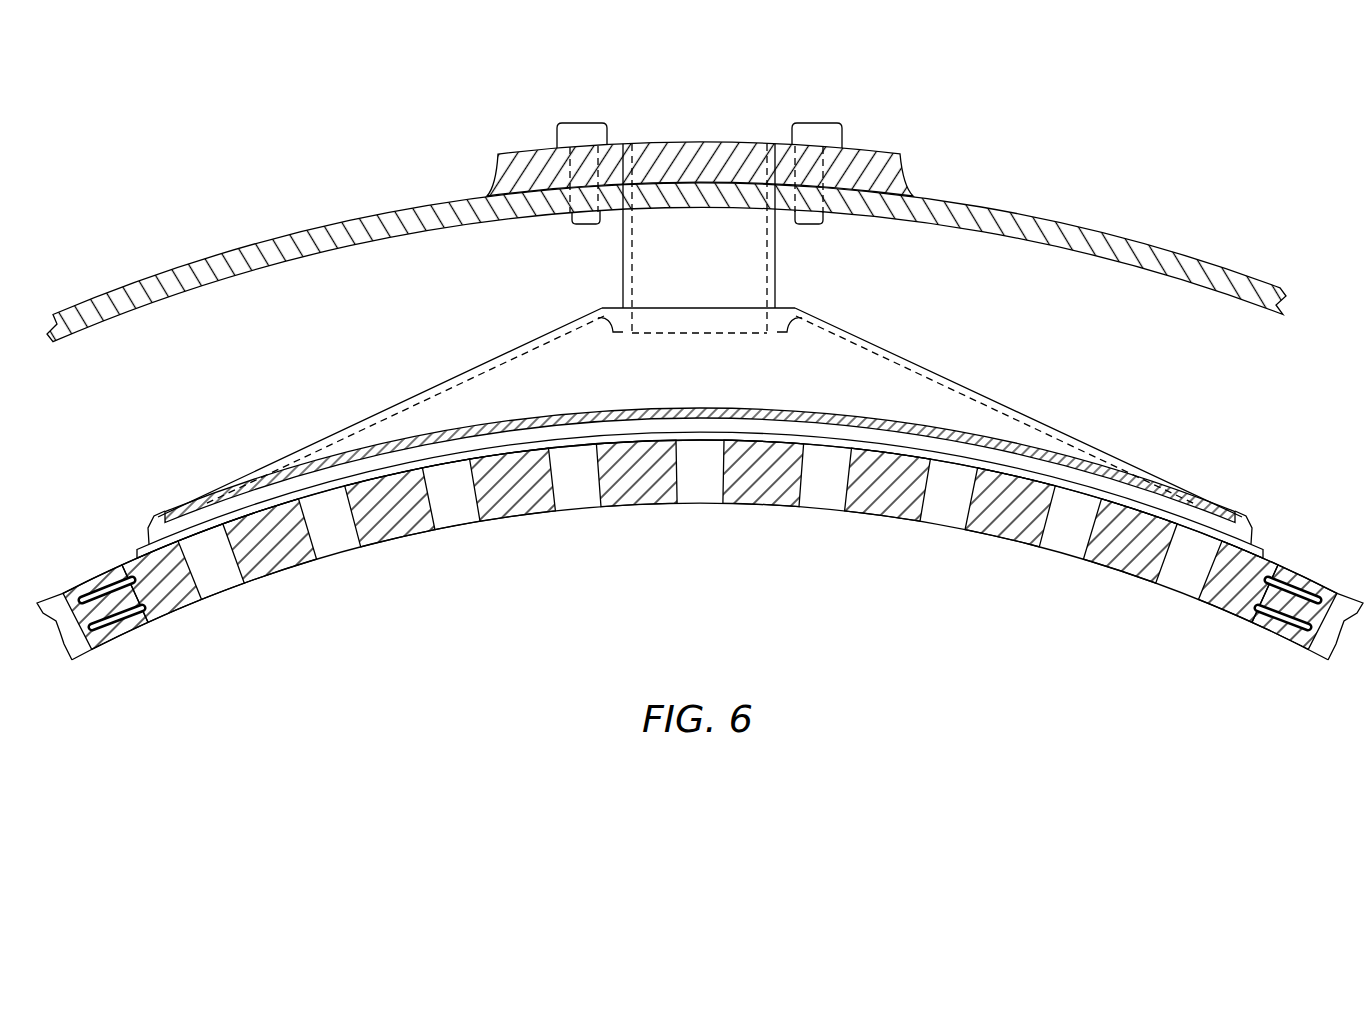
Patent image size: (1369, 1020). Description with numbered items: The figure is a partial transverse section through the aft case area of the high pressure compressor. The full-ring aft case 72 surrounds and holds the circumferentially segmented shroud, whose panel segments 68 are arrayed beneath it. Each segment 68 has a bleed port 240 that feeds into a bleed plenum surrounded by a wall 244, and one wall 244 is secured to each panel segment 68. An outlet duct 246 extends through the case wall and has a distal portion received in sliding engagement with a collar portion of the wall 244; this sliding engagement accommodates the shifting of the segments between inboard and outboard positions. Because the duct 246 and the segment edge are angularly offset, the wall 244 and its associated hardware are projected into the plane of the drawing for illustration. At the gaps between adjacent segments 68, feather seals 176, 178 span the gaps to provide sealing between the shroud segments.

The shroud segment 68 is at (1132, 563).
The aft case 72 is at (293, 232).
The feather seal 176 is at (118, 637).
The feather seal 178 is at (87, 593).
The bleed port 240 is at (220, 580).
The wall 244 is at (947, 378).
The outlet duct 246 is at (775, 270).